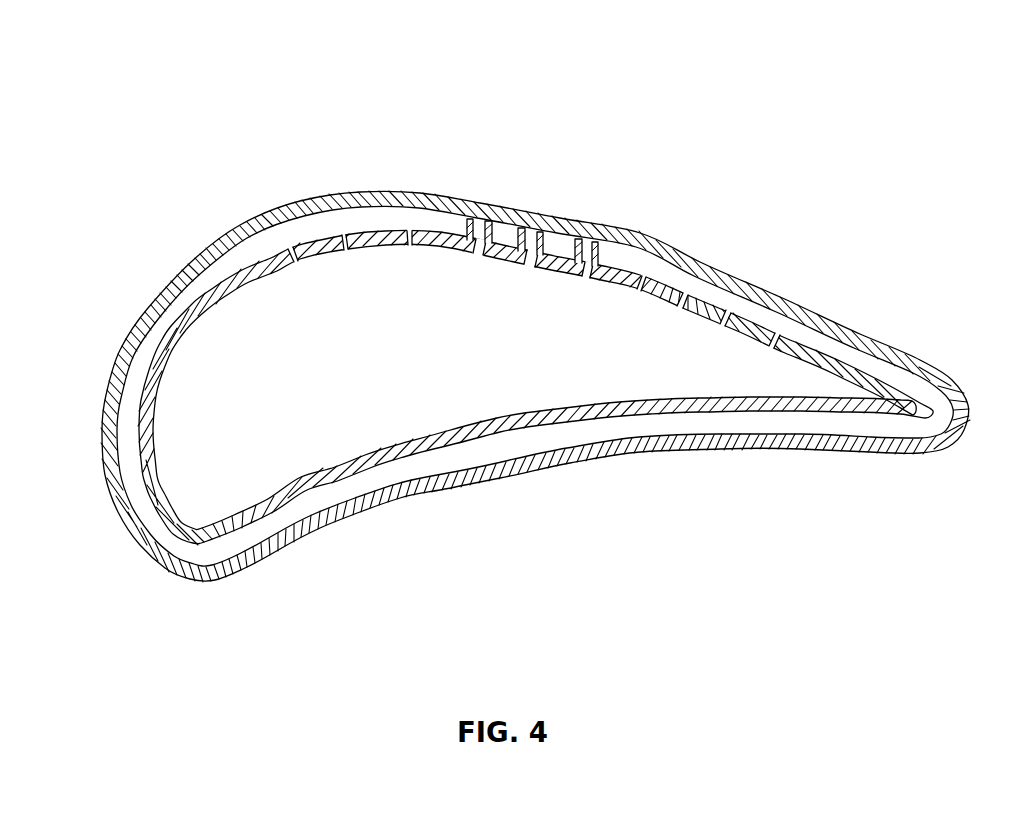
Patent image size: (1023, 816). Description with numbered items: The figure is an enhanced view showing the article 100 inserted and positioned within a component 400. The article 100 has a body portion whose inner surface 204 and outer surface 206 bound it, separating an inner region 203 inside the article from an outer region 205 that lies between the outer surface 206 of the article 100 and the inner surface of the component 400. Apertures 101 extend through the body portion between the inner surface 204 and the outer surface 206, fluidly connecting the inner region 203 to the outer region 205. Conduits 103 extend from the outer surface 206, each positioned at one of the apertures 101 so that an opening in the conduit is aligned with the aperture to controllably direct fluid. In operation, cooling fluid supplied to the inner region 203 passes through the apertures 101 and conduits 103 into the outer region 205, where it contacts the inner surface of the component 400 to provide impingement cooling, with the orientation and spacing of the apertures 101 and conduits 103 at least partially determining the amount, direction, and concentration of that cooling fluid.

The component 400 is at (255, 133).
The article 100 is at (343, 481).
The apertures 101 is at (770, 327).
The conduits 103 is at (592, 241).
The inner region 203 is at (494, 366).
The inner surface 204 is at (452, 240).
The outer region 205 is at (608, 430).
The outer surface 206 is at (840, 357).